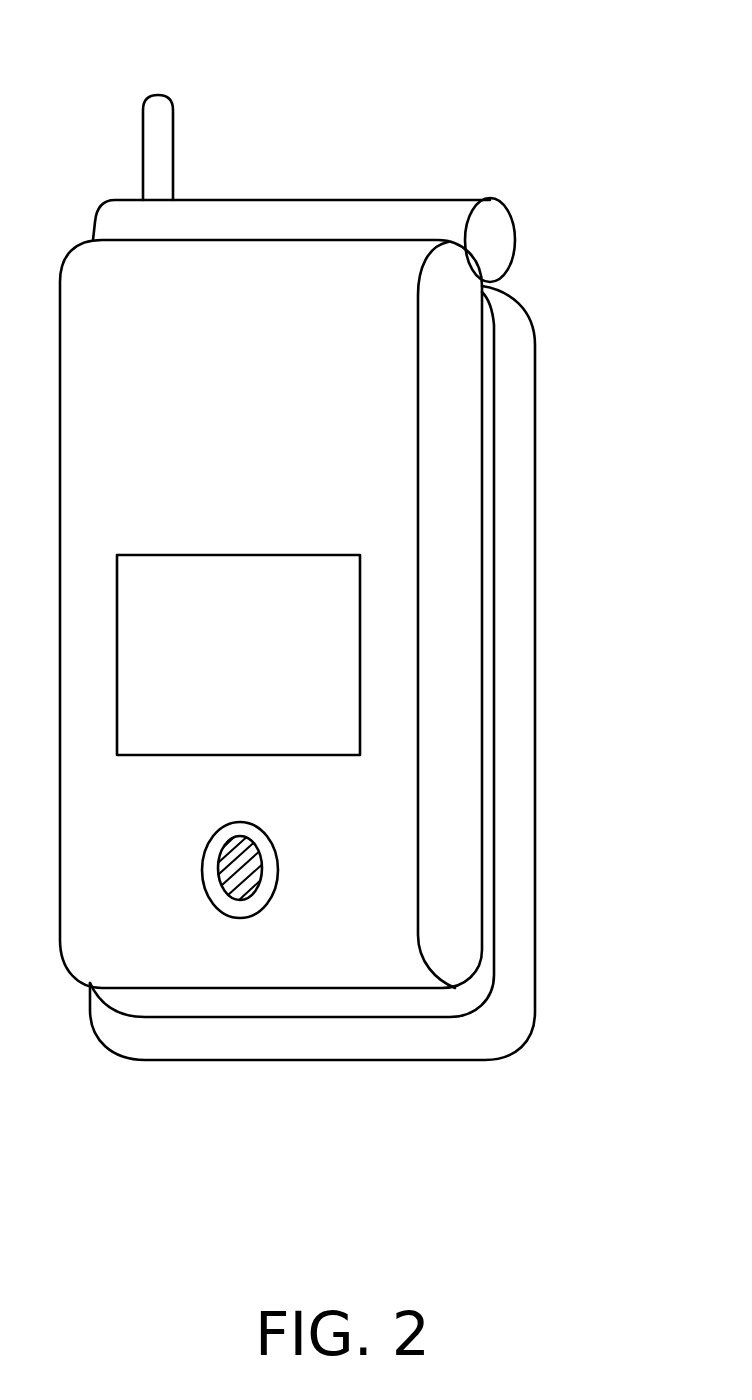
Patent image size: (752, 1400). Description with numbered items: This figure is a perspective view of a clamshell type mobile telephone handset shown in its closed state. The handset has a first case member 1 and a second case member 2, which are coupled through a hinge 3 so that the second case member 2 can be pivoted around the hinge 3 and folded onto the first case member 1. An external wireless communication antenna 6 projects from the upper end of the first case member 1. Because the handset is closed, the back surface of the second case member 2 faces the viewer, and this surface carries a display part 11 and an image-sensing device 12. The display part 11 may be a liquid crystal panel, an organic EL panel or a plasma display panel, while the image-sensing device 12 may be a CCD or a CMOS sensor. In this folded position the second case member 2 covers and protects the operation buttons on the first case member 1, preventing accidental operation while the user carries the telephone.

The first case member 1 is at (515, 765).
The second case member 2 is at (458, 921).
The hinge 3 is at (518, 238).
The external wireless communication antenna 6 is at (157, 95).
The display part 11 is at (300, 648).
The image-sensing device 12 is at (250, 866).